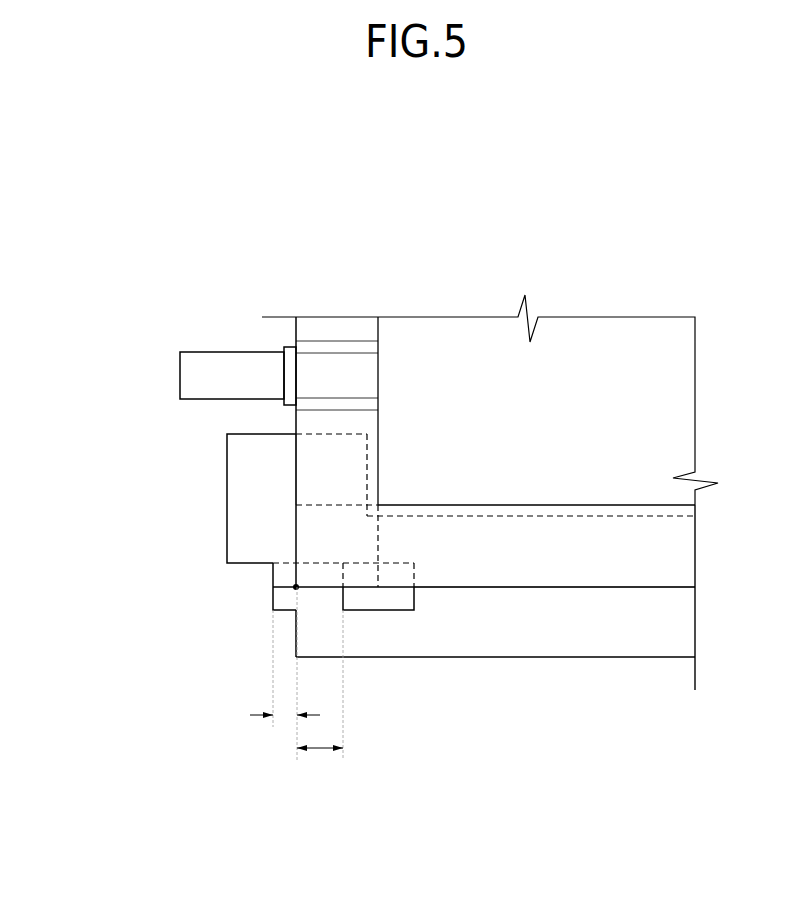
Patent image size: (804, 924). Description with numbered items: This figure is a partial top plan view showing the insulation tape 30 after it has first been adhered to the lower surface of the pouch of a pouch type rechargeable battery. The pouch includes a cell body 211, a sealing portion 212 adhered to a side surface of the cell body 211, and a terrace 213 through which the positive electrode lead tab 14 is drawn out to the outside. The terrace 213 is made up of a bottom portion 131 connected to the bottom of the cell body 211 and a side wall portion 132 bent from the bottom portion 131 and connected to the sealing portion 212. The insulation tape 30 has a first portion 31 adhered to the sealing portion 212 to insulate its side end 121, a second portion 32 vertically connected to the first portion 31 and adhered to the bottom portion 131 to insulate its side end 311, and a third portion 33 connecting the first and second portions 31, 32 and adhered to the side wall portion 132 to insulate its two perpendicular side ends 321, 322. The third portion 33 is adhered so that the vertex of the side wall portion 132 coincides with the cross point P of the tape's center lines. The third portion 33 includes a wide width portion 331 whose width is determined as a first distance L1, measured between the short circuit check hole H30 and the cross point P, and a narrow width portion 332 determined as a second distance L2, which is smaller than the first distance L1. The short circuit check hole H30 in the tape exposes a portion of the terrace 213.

The positive electrode lead tab 14 is at (201, 365).
The side end of the sealing portion 121 is at (612, 587).
The bottom portion 131 is at (313, 422).
The side wall portion 132 is at (313, 532).
The cell body 211 is at (667, 390).
The sealing portion 212 is at (667, 550).
The terrace 213 is at (218, 452).
The insulation tape 30 is at (414, 626).
The first portion 31 is at (495, 640).
The second portion 32 is at (293, 576).
The side end of the bottom portion 311 is at (296, 463).
The side end of the side wall portion 321 is at (296, 573).
The side end of the side wall portion 322 is at (320, 587).
The third portion 33 is at (221, 638).
The wide width portion 331 is at (310, 642).
The narrow width portion 332 is at (285, 601).
The short circuit check hole H30 is at (397, 610).
The cross point P is at (275, 587).
The first distance L1 is at (320, 697).
The second distance L2 is at (285, 673).